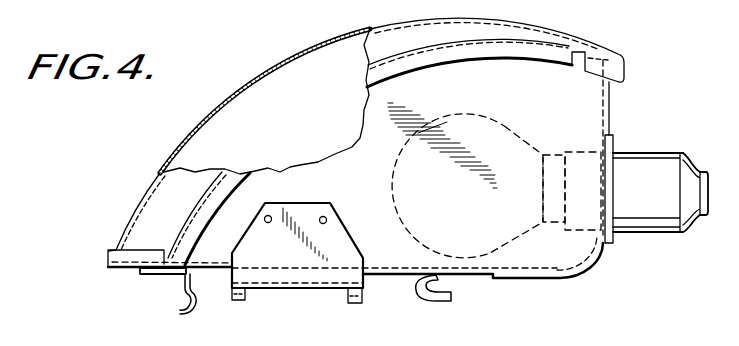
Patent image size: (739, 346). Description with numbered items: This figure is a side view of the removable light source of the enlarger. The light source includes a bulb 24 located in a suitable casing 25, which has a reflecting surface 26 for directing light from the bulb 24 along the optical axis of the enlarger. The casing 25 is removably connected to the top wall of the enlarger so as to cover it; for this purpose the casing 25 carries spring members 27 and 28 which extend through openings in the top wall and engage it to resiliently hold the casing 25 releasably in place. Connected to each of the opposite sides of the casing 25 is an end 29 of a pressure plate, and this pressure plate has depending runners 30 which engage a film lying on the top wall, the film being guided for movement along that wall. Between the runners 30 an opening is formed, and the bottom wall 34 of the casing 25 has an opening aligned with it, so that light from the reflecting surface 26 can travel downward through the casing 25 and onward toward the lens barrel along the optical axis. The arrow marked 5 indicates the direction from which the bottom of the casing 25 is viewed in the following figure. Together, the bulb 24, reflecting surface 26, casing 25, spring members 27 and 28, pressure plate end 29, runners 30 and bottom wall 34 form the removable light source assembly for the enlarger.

The bulb 24 is at (541, 154).
The casing 25 is at (147, 193).
The reflecting surface 26 is at (283, 62).
The spring member 27 is at (180, 310).
The spring member 28 is at (449, 303).
The end of pressure plate 29 is at (304, 215).
The runners 30 is at (240, 303).
The bottom wall 34 is at (561, 281).
The section view 5 direction arrow 5 is at (393, 288).